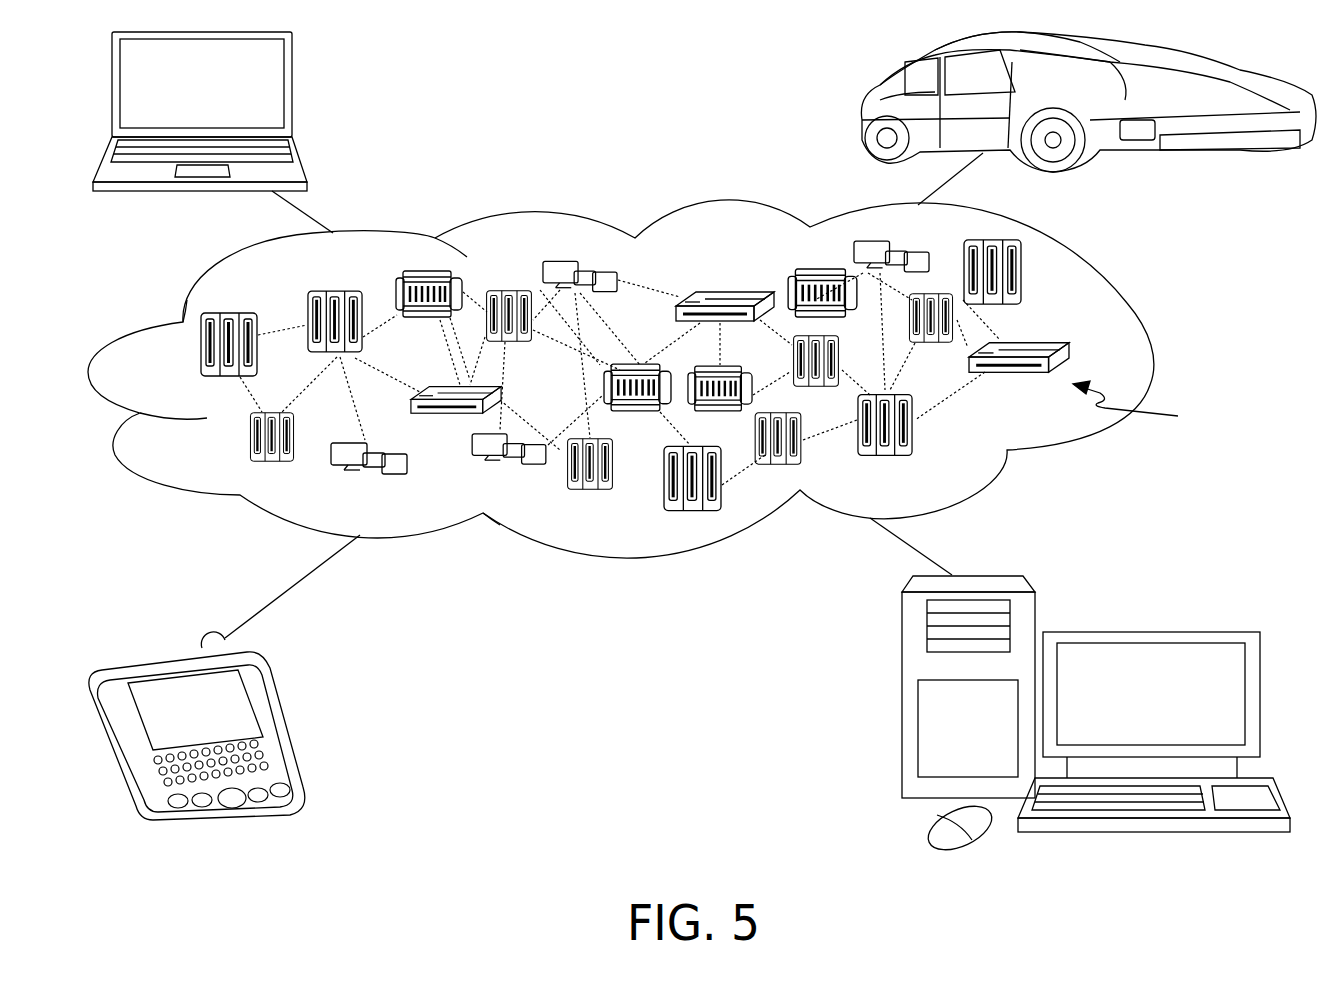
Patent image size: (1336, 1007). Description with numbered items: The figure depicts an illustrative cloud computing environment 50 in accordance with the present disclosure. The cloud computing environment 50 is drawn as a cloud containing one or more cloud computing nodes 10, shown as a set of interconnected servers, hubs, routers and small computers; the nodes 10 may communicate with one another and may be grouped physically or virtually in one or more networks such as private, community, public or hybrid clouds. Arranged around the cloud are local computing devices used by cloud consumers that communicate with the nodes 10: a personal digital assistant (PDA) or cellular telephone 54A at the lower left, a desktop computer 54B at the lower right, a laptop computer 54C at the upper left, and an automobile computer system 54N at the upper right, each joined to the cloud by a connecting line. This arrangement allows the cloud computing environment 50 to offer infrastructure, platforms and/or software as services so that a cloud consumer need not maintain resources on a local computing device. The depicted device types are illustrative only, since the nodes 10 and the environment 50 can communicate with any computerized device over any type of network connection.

The cloud computing nodes 10 is at (1141, 406).
The cloud computing environment 50 is at (1153, 355).
The personal digital assistant (PDA) or cellular telephone 54A is at (280, 723).
The desktop computer 54B is at (1147, 628).
The laptop computer 54C is at (292, 90).
The automobile computer system 54N is at (860, 105).